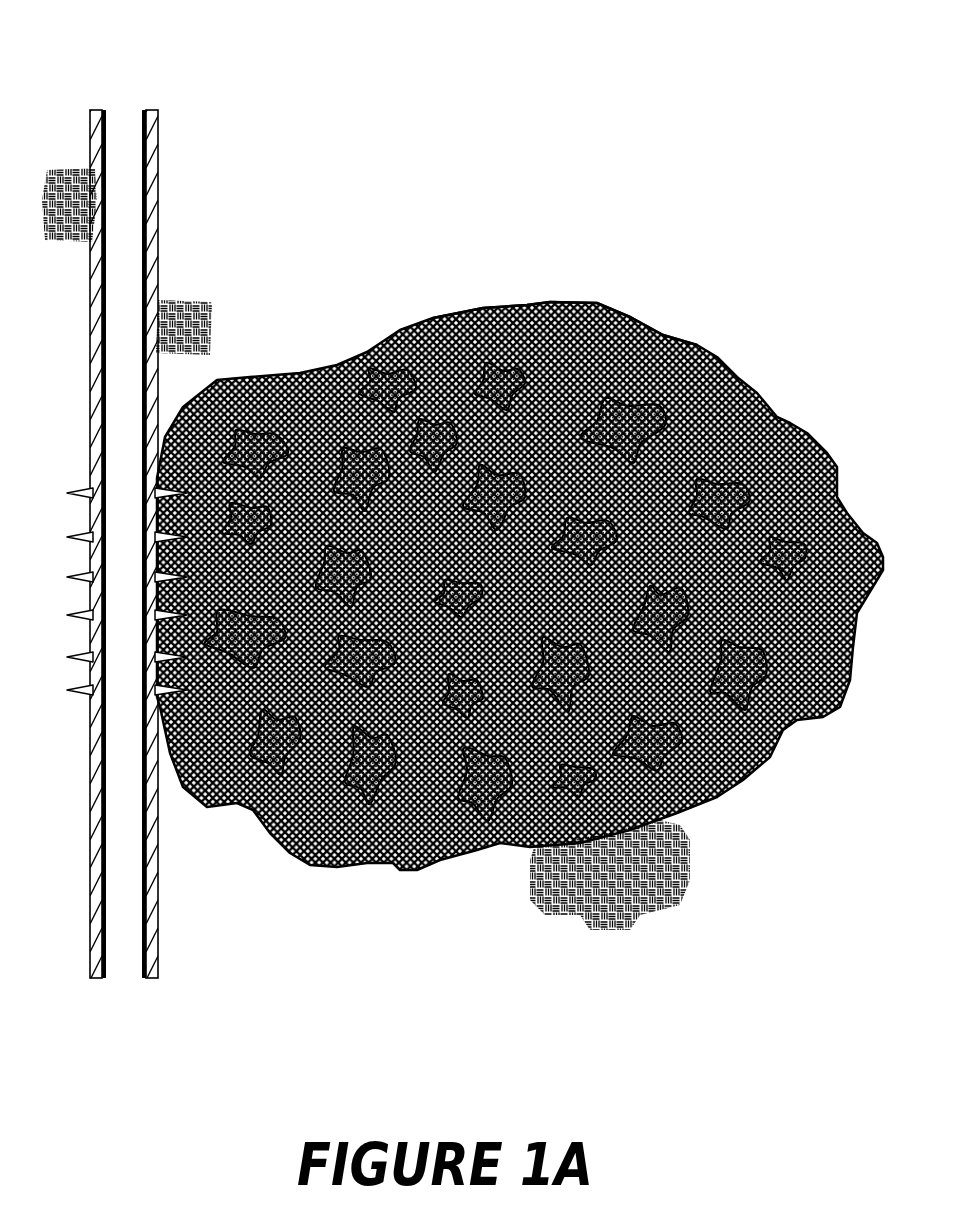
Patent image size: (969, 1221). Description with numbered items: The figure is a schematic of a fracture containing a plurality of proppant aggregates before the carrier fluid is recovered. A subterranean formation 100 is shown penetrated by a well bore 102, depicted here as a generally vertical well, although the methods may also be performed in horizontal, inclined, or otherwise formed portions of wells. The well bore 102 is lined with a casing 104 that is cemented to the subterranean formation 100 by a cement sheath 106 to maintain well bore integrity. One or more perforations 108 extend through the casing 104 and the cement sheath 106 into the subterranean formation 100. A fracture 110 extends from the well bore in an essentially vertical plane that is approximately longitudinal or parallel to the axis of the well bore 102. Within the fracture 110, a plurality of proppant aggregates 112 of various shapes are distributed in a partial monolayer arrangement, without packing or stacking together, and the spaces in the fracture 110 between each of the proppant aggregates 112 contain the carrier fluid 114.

The subterranean formation 100 is at (462, 549).
The well bore 102 is at (160, 253).
The casing 104 is at (114, 119).
The cement sheath 106 is at (150, 923).
The perforations 108 is at (160, 700).
The fracture 110 is at (753, 393).
The proppant aggregates 112 is at (657, 393).
The carrier fluid 114 is at (610, 317).